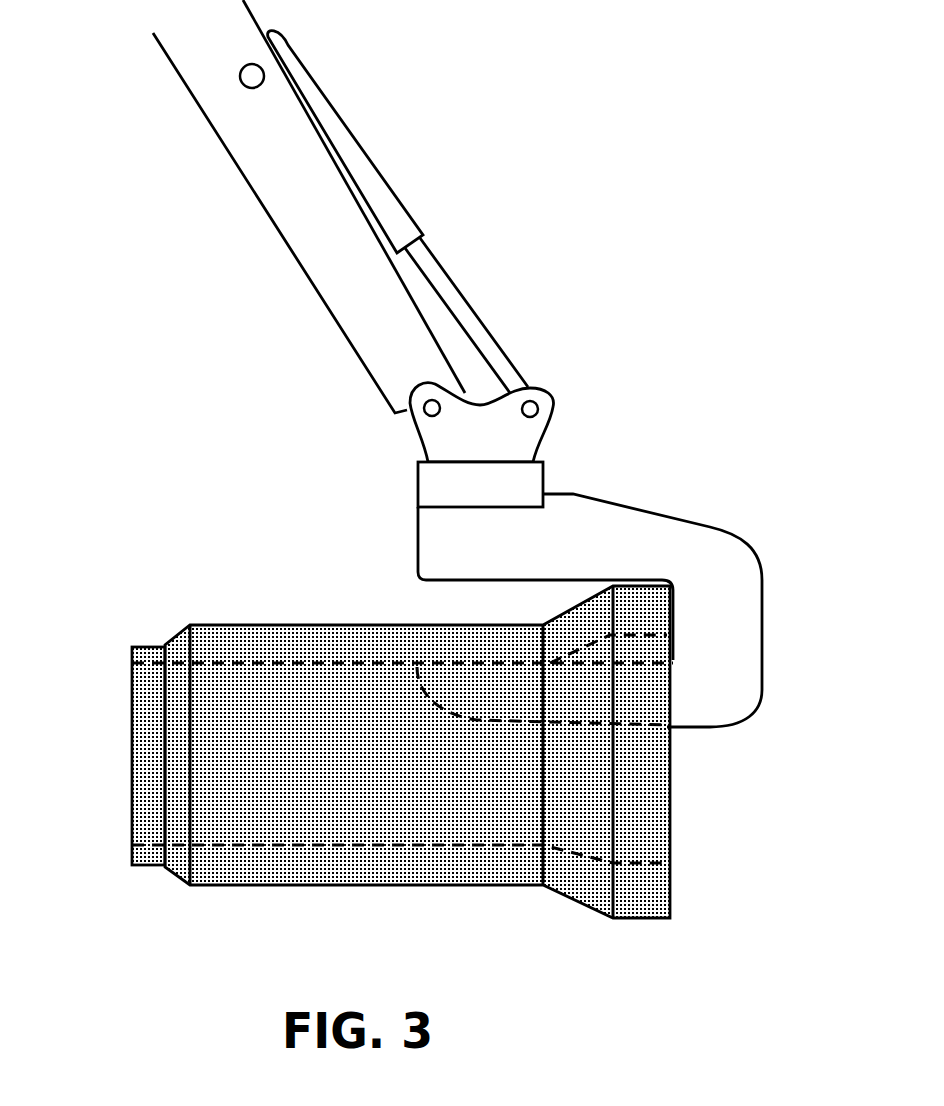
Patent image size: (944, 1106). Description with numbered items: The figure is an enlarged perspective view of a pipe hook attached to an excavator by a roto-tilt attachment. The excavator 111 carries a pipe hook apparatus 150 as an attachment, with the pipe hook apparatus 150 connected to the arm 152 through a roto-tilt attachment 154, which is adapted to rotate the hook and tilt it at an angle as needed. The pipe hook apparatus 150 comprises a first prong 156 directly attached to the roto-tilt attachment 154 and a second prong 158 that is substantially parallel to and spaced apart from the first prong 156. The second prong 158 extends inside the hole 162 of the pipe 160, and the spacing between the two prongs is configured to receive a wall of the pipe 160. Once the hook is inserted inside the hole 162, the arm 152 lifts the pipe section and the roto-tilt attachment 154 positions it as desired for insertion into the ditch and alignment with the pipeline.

The excavator 111 is at (436, 126).
The pipe hook apparatus 150 is at (445, 733).
The arm 152 is at (315, 287).
The roto-tilt attachment 154 is at (543, 481).
The first prong 156 is at (630, 530).
The second prong 158 is at (710, 715).
The pipe 160 is at (300, 622).
The hole 162 is at (130, 762).